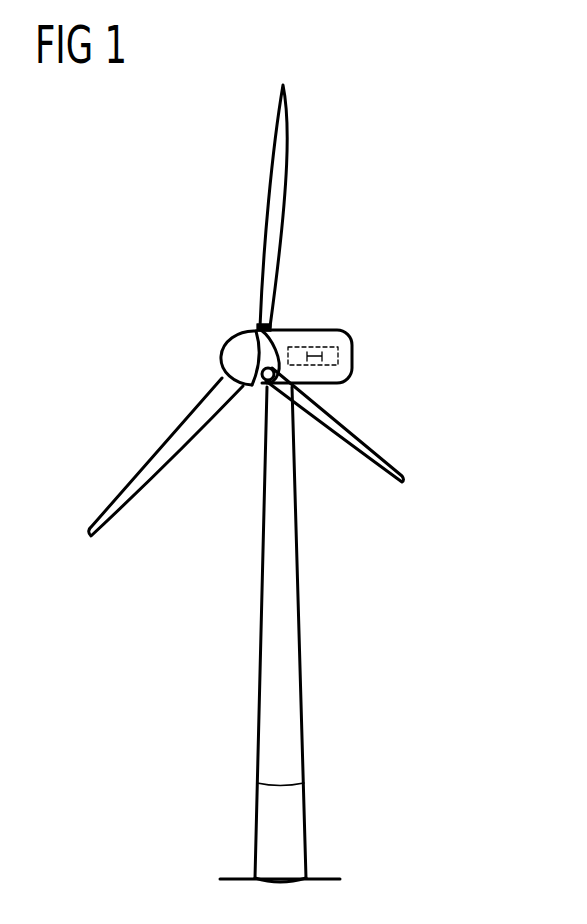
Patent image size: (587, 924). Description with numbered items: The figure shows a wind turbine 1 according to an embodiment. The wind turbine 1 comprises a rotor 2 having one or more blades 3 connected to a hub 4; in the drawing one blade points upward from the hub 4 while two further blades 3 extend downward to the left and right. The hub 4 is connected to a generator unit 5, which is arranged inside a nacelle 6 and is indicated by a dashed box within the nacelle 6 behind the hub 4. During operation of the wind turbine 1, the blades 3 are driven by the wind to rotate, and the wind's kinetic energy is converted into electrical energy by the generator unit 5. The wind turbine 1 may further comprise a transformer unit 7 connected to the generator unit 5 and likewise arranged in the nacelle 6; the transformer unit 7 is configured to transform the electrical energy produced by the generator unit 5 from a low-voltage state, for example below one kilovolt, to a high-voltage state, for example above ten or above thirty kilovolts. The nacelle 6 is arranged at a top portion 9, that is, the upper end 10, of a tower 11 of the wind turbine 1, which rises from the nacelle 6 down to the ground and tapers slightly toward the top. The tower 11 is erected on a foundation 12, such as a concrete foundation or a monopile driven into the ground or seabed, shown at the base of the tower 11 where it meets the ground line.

The wind turbine 1 is at (423, 198).
The rotor 2 is at (217, 330).
The blades 3 is at (279, 186).
The hub 4 is at (233, 361).
The generator unit 5 is at (295, 346).
The nacelle 6 is at (354, 356).
The transformer unit 7 is at (327, 346).
The top portion 9 is at (233, 449).
The upper end 10 is at (263, 390).
The tower 11 is at (283, 597).
The foundation 12 is at (293, 837).